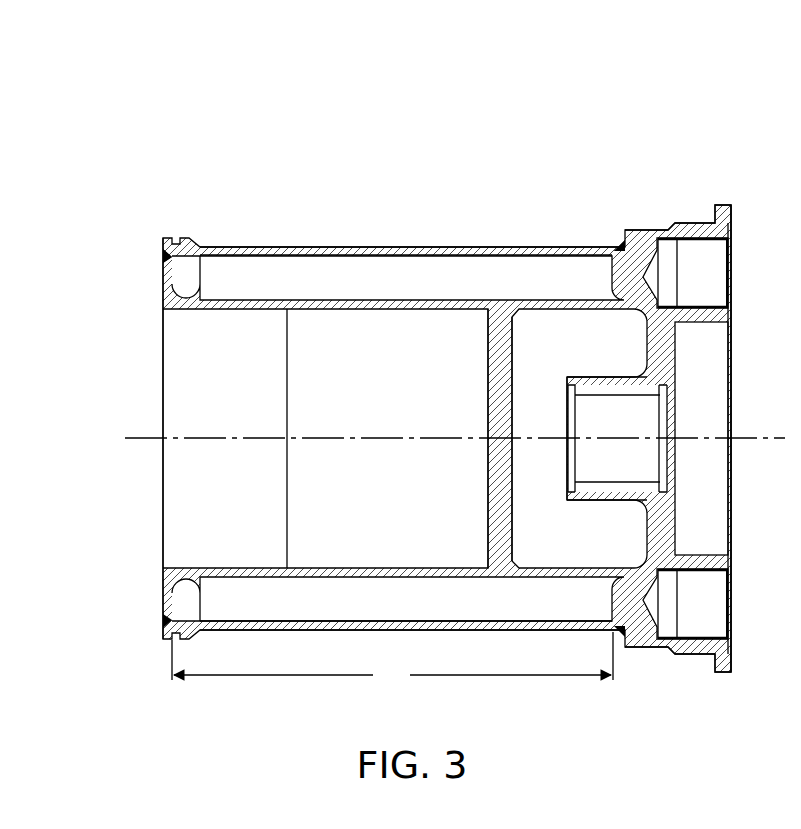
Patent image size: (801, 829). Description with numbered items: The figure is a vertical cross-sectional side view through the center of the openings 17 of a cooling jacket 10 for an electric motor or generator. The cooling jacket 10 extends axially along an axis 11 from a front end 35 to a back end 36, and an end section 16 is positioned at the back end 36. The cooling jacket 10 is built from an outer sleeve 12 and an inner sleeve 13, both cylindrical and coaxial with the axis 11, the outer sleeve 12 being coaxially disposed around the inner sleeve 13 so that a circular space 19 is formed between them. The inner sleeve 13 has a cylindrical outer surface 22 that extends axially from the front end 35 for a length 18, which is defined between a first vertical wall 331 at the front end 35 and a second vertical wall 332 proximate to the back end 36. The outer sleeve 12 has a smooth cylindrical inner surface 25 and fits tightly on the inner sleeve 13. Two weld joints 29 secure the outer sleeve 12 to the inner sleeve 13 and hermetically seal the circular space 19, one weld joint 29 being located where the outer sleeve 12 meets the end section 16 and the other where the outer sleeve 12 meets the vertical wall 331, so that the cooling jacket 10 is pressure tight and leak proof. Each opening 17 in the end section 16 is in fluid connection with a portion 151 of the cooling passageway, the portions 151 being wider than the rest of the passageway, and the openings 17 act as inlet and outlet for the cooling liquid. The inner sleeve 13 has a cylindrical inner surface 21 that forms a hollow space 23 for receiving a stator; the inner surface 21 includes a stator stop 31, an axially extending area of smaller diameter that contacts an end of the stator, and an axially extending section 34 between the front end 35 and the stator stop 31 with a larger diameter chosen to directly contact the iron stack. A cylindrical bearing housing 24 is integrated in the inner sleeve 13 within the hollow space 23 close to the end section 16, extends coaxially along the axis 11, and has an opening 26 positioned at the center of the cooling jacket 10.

The cooling jacket 10 is at (178, 140).
The axis 11 is at (140, 440).
The outer sleeve 12 is at (277, 232).
The inner sleeve 13 is at (152, 284).
The end section 16 is at (692, 204).
The openings 17 is at (710, 283).
The length 18 is at (392, 660).
The circular space 19 is at (388, 268).
The cylindrical inner surface 21 is at (247, 310).
The cylindrical outer surface 22 is at (263, 300).
The hollow space 23 is at (200, 522).
The bearing housing 24 is at (600, 383).
The inner surface 25 is at (438, 255).
The opening 26 is at (673, 423).
The weld joints 29 is at (165, 253).
The stator stop 31 is at (492, 477).
The axially extending section 34 is at (413, 378).
The front end 35 is at (163, 392).
The back end 36 is at (733, 397).
The portion of the passageway 151 is at (535, 275).
The first vertical wall 331 is at (170, 600).
The second vertical wall 332 is at (628, 605).